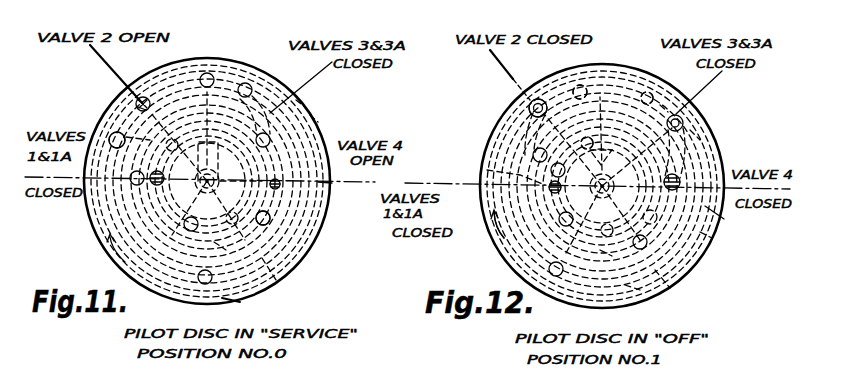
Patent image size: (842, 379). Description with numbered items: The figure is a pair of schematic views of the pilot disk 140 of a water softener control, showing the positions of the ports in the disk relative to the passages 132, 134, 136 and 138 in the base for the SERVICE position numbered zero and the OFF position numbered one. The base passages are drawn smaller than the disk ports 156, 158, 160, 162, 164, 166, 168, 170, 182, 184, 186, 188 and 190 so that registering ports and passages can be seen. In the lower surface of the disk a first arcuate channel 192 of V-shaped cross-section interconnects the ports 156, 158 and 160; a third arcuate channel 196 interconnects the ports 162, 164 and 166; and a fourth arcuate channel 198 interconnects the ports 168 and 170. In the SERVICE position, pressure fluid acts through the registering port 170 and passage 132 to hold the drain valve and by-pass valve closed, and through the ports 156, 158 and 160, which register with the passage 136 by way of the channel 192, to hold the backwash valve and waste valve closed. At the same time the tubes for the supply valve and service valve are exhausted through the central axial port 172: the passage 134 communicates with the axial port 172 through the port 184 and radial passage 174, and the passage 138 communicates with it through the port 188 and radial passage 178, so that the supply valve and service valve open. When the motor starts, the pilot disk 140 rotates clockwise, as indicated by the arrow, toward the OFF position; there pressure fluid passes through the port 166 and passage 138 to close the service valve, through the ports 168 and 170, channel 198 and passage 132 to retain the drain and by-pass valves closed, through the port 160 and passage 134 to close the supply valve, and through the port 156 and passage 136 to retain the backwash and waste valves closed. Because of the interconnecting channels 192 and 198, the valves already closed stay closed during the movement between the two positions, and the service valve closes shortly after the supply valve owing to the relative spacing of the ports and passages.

In FIG. 11, the passage 132 is at (152, 184).
In FIG. 12, the passage 132 is at (487, 170).
In FIG. 11, the passage 134 is at (132, 98).
In FIG. 12, the passage 134 is at (540, 98).
In FIG. 11, the passage 136 is at (297, 102).
In FIG. 12, the passage 136 is at (668, 102).
In FIG. 11, the passage 138 is at (322, 185).
In FIG. 12, the passage 138 is at (722, 218).
In FIG. 11, the pilot disk 140 is at (318, 114).
In FIG. 12, the pilot disk 140 is at (700, 135).
In FIG. 11, the port 156 is at (251, 87).
In FIG. 12, the port 156 is at (686, 112).
In FIG. 11, the port 158 is at (232, 297).
In FIG. 12, the port 158 is at (549, 270).
In FIG. 11, the port 160 is at (111, 135).
In FIG. 12, the port 160 is at (529, 106).
In FIG. 11, the port 162 is at (270, 225).
In FIG. 12, the port 162 is at (648, 242).
In FIG. 11, the port 164 is at (132, 183).
In FIG. 12, the port 164 is at (533, 153).
In FIG. 11, the port 166 is at (270, 138).
In FIG. 12, the port 166 is at (674, 175).
In FIG. 11, the port 168 is at (186, 232).
In FIG. 12, the port 168 is at (569, 211).
In FIG. 11, the port 170 is at (184, 216).
In FIG. 12, the port 170 is at (565, 165).
In FIG. 12, the axial port 172 is at (562, 187).
In FIG. 11, the radial passage 174 is at (140, 108).
In FIG. 11, the radial passage 178 is at (256, 184).
In FIG. 11, the port 182 is at (117, 132).
In FIG. 12, the port 182 is at (590, 137).
In FIG. 11, the port 184 is at (141, 96).
In FIG. 12, the port 184 is at (577, 84).
In FIG. 11, the port 186 is at (208, 72).
In FIG. 12, the port 186 is at (652, 90).
In FIG. 11, the port 188 is at (266, 210).
In FIG. 12, the port 188 is at (710, 237).
In FIG. 11, the port 190 is at (219, 250).
In FIG. 12, the port 190 is at (605, 258).
In FIG. 11, the first arcuate channel 192 is at (277, 281).
In FIG. 12, the first arcuate channel 192 is at (672, 290).
In FIG. 12, the third arcuate channel 196 is at (635, 290).
In FIG. 12, the fourth arcuate channel 198 is at (505, 259).